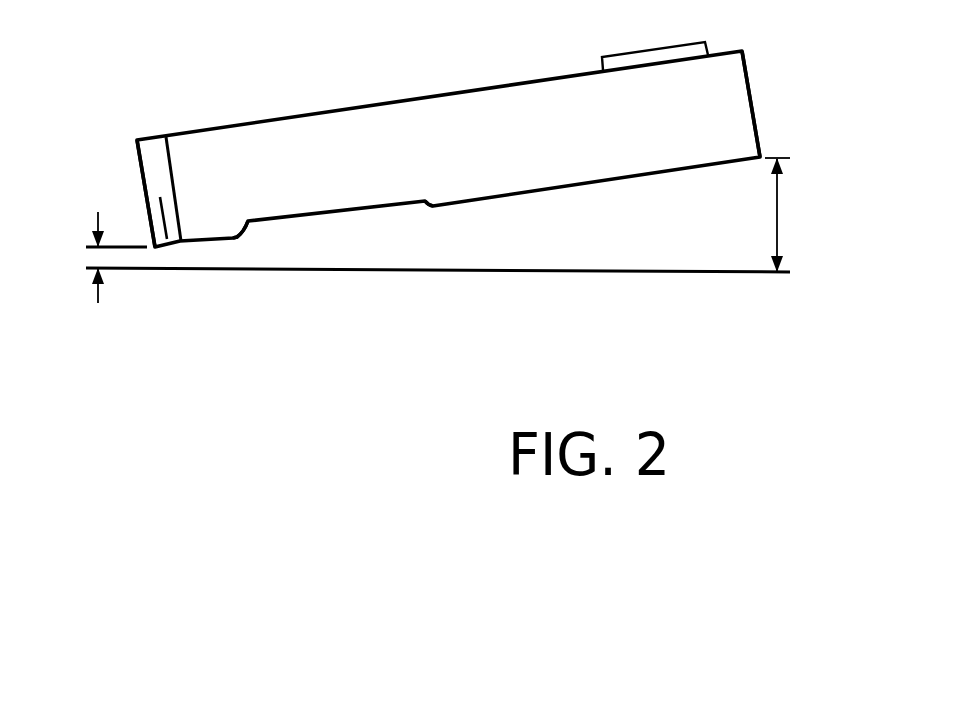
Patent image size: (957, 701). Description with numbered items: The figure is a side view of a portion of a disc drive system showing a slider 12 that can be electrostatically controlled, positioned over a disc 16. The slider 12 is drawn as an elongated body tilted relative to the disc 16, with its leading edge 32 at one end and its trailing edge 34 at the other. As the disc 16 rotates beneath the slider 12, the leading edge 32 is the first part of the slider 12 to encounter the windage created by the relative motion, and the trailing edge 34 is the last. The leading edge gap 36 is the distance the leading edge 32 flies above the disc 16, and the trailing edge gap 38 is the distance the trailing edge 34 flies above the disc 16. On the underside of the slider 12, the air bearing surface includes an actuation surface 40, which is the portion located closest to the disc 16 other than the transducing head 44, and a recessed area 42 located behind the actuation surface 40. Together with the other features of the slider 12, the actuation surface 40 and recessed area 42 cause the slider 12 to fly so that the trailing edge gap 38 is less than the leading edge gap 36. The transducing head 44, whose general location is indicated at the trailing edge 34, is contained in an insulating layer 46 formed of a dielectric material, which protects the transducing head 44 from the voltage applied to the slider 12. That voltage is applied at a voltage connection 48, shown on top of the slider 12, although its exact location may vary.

The slider 12 is at (438, 110).
The disc 16 is at (620, 273).
The leading edge 32 is at (760, 91).
The trailing edge 34 is at (110, 157).
The leading edge gap 36 is at (798, 214).
The trailing edge gap 38 is at (87, 280).
The actuation surface 40 is at (213, 238).
The recessed area 42 is at (402, 214).
The transducing head 44 is at (157, 228).
The insulating layer 46 is at (152, 147).
The voltage connection 48 is at (623, 53).